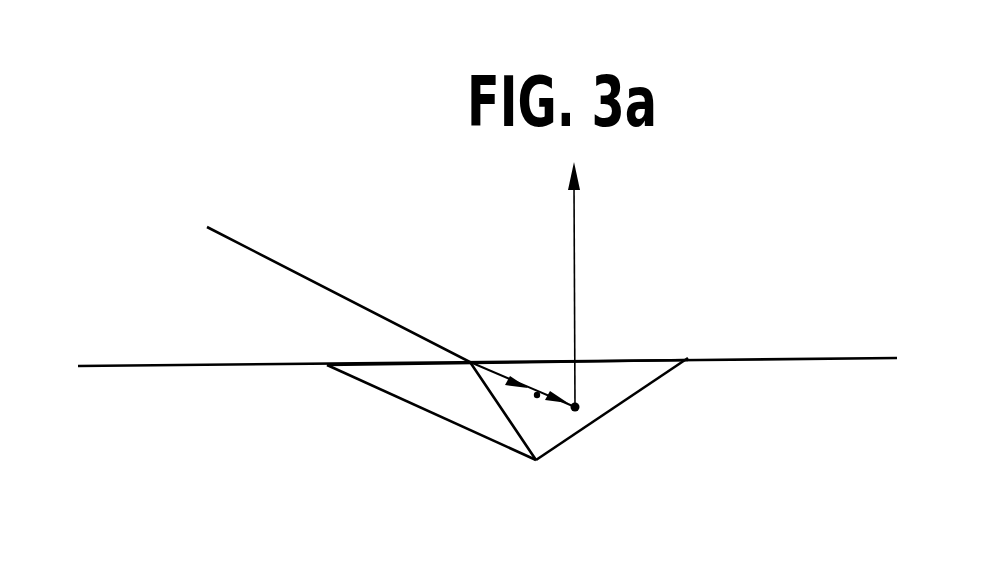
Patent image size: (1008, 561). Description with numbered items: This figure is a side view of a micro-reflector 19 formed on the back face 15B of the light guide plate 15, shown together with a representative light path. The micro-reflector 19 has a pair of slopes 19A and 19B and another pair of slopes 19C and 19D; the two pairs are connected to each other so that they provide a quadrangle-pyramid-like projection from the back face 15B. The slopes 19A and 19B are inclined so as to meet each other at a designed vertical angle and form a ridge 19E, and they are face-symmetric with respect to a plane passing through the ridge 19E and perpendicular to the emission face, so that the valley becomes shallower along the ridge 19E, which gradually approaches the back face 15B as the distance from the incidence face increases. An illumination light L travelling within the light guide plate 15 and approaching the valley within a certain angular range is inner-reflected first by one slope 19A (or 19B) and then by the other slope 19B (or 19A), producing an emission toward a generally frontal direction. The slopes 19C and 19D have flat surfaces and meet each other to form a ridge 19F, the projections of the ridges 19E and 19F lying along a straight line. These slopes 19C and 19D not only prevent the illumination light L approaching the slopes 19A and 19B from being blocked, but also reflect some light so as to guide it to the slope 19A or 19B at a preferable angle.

The light guide plate 15 is at (733, 340).
The back face 15B is at (808, 360).
The illumination light L is at (291, 264).
The prism structure 19 is at (492, 348).
The slope 19A is at (610, 392).
The slope 19B is at (628, 367).
The slope 19C is at (485, 413).
The slope 19D is at (387, 372).
The ridge 19E is at (565, 440).
The ridge 19F is at (372, 387).